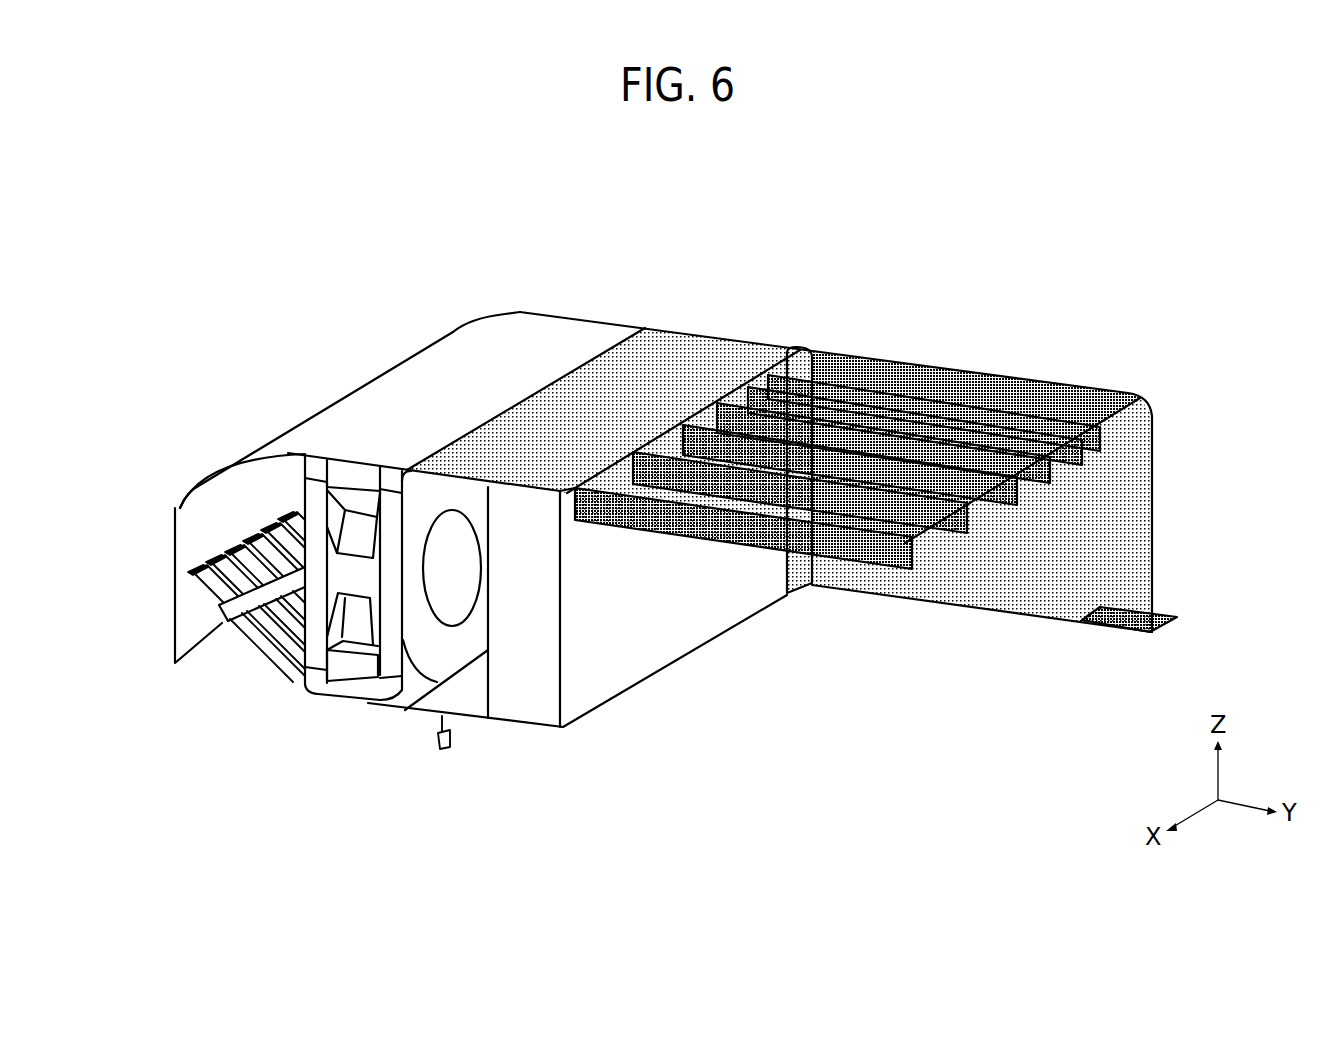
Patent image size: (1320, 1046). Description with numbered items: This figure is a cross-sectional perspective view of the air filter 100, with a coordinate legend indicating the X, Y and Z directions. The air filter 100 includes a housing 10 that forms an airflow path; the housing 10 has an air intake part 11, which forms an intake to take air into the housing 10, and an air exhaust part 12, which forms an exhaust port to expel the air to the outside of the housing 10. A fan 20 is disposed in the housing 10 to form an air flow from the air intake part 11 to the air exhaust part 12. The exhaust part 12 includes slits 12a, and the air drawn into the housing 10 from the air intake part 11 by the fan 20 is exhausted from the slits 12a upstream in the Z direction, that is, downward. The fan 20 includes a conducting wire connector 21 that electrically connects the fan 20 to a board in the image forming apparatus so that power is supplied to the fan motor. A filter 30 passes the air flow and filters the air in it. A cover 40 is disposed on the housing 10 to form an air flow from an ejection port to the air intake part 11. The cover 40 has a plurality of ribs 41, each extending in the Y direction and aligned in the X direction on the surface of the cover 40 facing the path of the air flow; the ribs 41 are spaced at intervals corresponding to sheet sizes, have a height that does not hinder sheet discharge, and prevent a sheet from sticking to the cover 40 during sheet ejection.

The air filter 100 is at (1098, 252).
The housing 10 is at (425, 368).
The air intake part 11 is at (630, 690).
The air exhaust part 12 is at (189, 688).
The slits 12a is at (280, 516).
The fan 20 is at (357, 672).
The conducting wire connector 21 is at (455, 737).
The filter 30 is at (710, 612).
The cover 40 is at (1134, 474).
The ribs 41 is at (1097, 449).